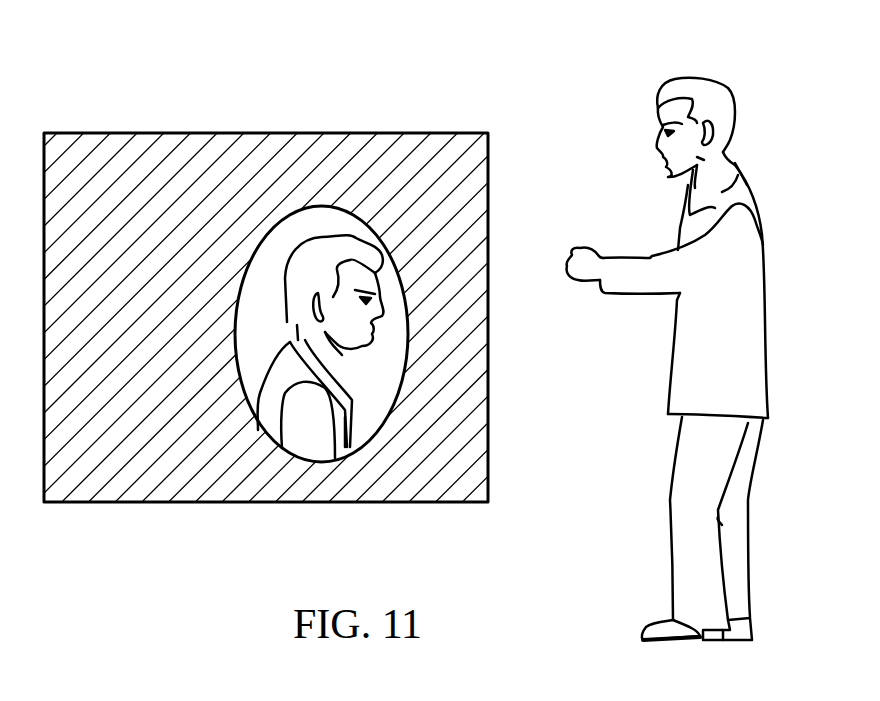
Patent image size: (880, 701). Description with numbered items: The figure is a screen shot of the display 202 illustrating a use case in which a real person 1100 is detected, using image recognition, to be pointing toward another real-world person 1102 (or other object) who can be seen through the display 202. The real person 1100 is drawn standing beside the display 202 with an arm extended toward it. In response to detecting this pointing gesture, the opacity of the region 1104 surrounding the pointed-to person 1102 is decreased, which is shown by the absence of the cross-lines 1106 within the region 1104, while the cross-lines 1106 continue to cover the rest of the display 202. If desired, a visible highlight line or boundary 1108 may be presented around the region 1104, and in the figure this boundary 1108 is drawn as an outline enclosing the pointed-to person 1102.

The display 202 is at (411, 134).
The real person 1100 is at (697, 77).
The real-world person 1102 is at (283, 430).
The region 1104 is at (378, 407).
The cross-lines 1106 is at (270, 152).
The highlight line or boundary 1108 is at (405, 335).